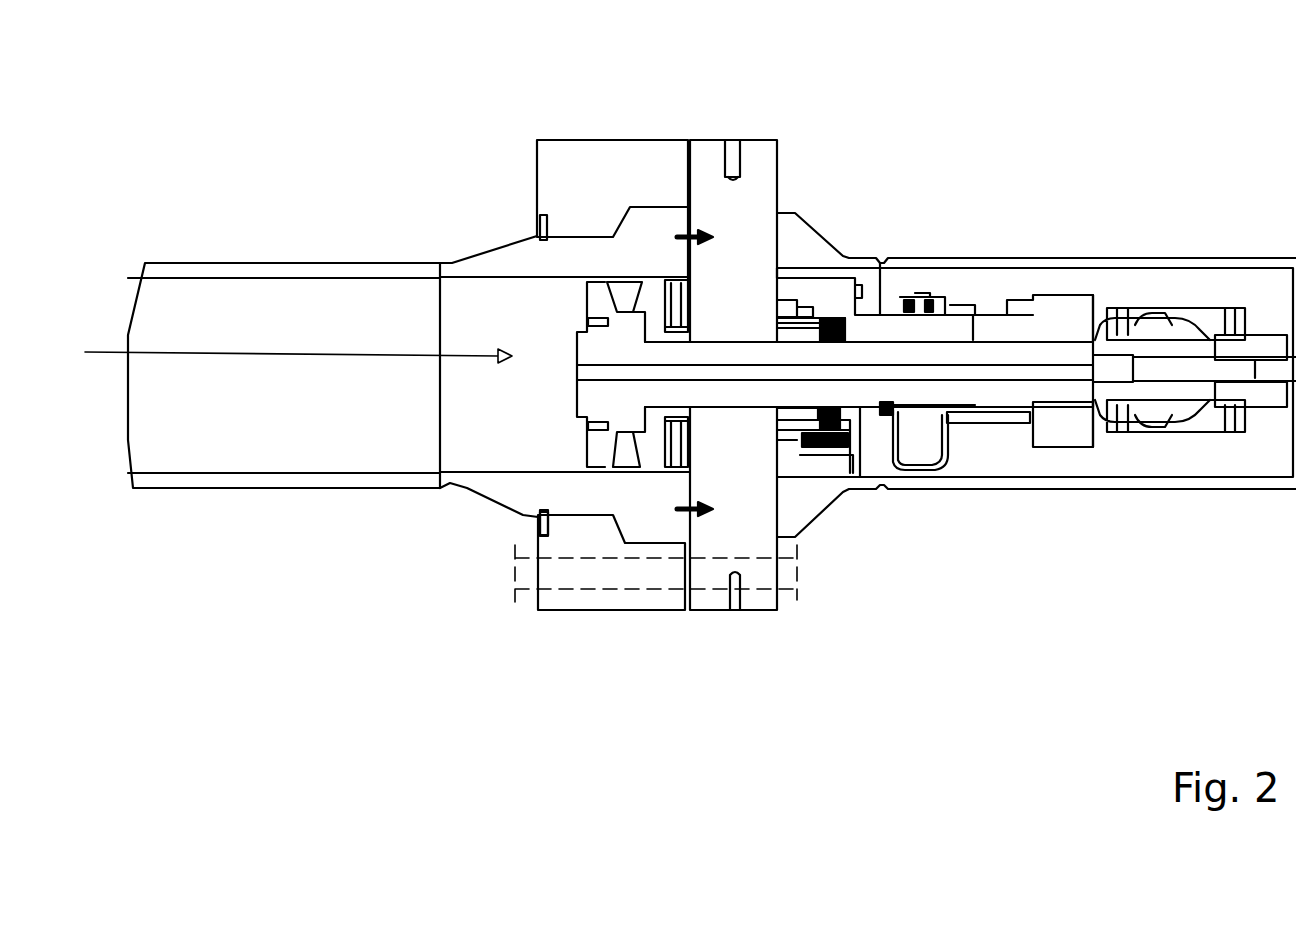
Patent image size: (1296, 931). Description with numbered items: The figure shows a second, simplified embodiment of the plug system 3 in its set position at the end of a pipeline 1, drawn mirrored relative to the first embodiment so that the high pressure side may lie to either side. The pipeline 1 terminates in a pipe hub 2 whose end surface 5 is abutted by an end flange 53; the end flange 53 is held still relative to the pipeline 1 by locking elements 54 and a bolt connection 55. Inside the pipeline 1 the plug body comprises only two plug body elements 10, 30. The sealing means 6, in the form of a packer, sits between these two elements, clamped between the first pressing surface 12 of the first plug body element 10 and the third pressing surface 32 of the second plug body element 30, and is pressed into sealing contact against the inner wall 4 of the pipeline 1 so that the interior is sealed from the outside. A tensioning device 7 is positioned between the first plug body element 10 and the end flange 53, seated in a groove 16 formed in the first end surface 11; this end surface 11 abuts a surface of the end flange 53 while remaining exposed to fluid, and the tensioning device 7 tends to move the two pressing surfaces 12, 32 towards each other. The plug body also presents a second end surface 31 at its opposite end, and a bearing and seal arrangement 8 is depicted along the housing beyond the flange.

The pipeline 1 is at (333, 268).
The pipe hub 2 is at (660, 222).
The plug system 3 is at (282, 354).
The inner wall 4 is at (243, 283).
The end surface 5 is at (692, 218).
The sealing means 6 is at (628, 290).
The tensioning device 7 is at (678, 234).
The bearing and seal assembly 8 is at (980, 284).
The first plug body element 10 is at (656, 293).
The first end surface 11 is at (693, 408).
The first pressing surface 12 is at (638, 436).
The groove 16 is at (697, 536).
The plug body element 30 is at (597, 303).
The second end surface 31 is at (575, 406).
The third pressing surface 32 is at (615, 434).
The end flange 53 is at (734, 529).
The locking elements 54 is at (567, 598).
The bolt connection 55 is at (535, 578).